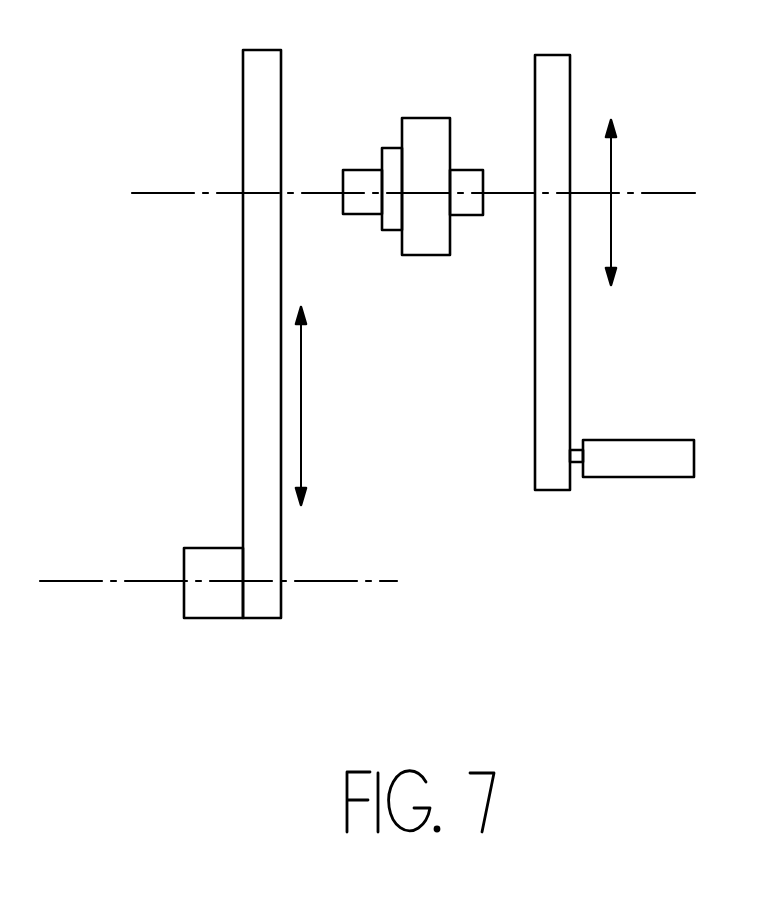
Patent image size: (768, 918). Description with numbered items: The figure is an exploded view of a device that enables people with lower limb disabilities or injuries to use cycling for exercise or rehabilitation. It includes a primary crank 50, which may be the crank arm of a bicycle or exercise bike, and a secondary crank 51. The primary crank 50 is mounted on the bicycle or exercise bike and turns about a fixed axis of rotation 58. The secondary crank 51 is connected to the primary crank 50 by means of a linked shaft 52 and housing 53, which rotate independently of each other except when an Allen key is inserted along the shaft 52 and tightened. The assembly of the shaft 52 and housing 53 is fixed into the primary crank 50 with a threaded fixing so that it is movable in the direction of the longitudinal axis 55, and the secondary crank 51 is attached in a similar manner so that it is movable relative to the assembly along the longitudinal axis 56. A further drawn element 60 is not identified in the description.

The primary crank 50 is at (262, 265).
The secondary crank 51 is at (562, 105).
The linked shaft 52 is at (393, 163).
The housing 53 is at (423, 152).
The longitudinal axis of the primary crank 55 is at (302, 447).
The longitudinal axis of the secondary crank 56 is at (609, 238).
The fixed axis of rotation 58 is at (153, 581).
The actuator 60 is at (637, 461).